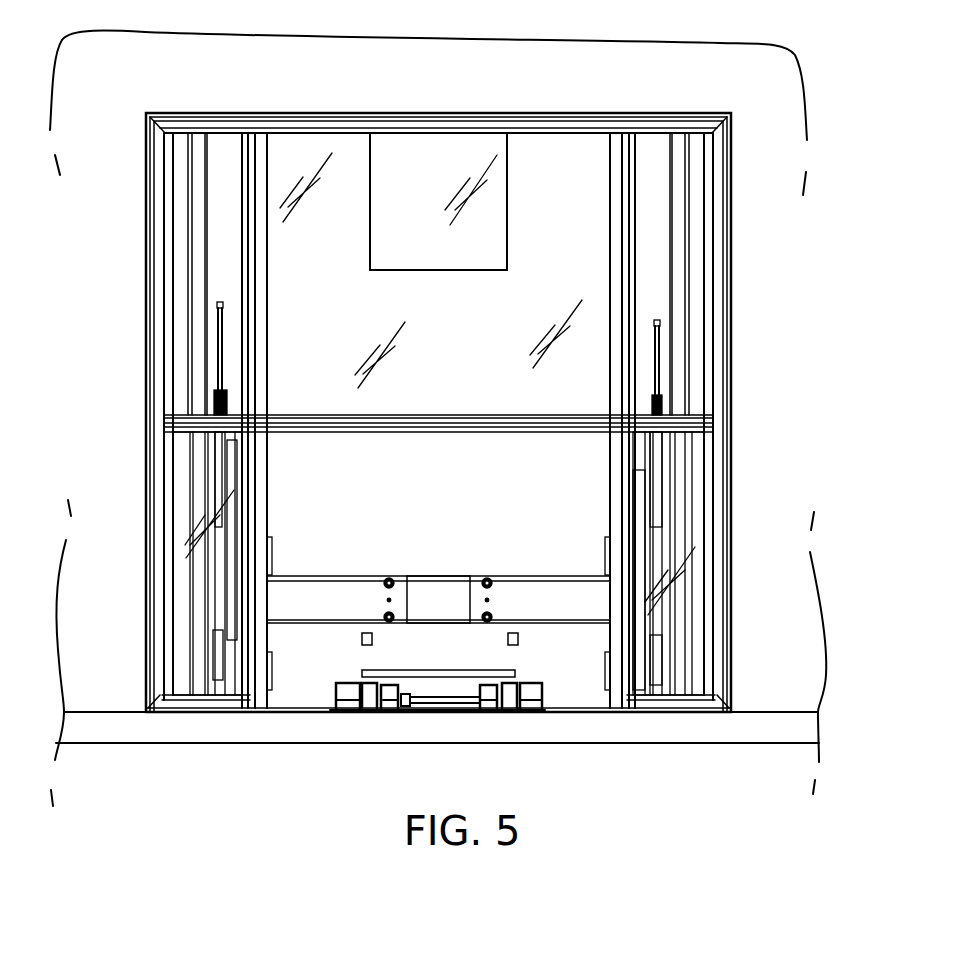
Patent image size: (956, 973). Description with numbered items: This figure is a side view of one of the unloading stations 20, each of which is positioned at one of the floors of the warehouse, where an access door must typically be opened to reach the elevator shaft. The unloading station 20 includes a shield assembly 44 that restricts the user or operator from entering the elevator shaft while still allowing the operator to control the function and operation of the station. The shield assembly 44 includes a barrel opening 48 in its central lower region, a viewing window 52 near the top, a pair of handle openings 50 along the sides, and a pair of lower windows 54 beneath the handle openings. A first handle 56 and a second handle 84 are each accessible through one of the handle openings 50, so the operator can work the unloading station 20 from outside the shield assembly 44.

The unloading station 20 is at (757, 321).
The shield assembly 44 is at (146, 191).
The barrel opening 48 is at (455, 470).
The handle openings 50 is at (170, 238).
The viewing window 52 is at (350, 176).
The lower windows 54 is at (183, 478).
The first handle 56 is at (225, 342).
The second handle 84 is at (652, 348).